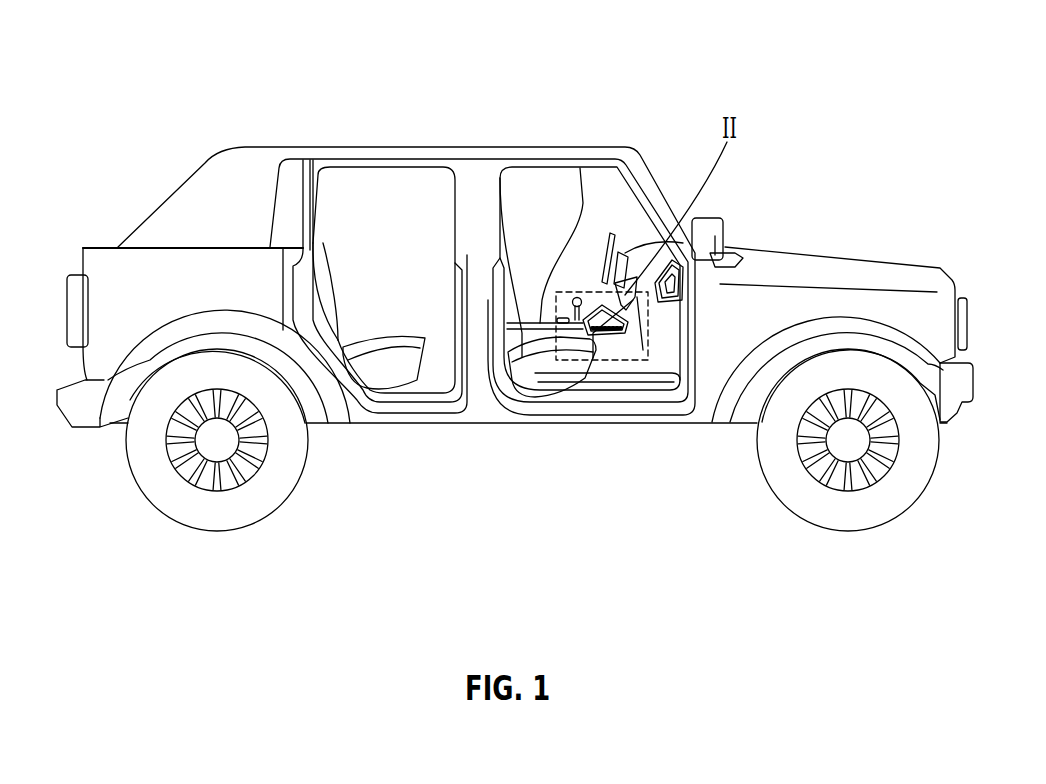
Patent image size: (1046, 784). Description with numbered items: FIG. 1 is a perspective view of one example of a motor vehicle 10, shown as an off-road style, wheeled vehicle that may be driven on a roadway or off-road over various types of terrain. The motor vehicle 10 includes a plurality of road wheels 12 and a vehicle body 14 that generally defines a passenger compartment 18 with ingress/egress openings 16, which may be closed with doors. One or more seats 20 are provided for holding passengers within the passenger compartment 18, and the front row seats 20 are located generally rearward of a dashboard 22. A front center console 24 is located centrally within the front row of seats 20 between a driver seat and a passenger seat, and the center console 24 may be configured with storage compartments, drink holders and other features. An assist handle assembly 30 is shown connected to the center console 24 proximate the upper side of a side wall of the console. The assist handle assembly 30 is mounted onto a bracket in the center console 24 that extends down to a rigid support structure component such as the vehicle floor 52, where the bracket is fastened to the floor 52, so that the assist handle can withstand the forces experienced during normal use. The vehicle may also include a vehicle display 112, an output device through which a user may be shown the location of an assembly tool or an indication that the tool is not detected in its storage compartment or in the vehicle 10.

The motor vehicle 10 is at (645, 112).
The road wheels 12 is at (153, 473).
The vehicle body 14 is at (495, 398).
The ingress/egress openings 16 is at (512, 170).
The passenger compartment 18 is at (539, 180).
The seats 20 is at (553, 370).
The dashboard 22 is at (613, 238).
The front center console 24 is at (585, 275).
The assist handle assembly 30 is at (590, 288).
The vehicle floor 52 is at (638, 381).
The vehicle display 112 is at (633, 250).